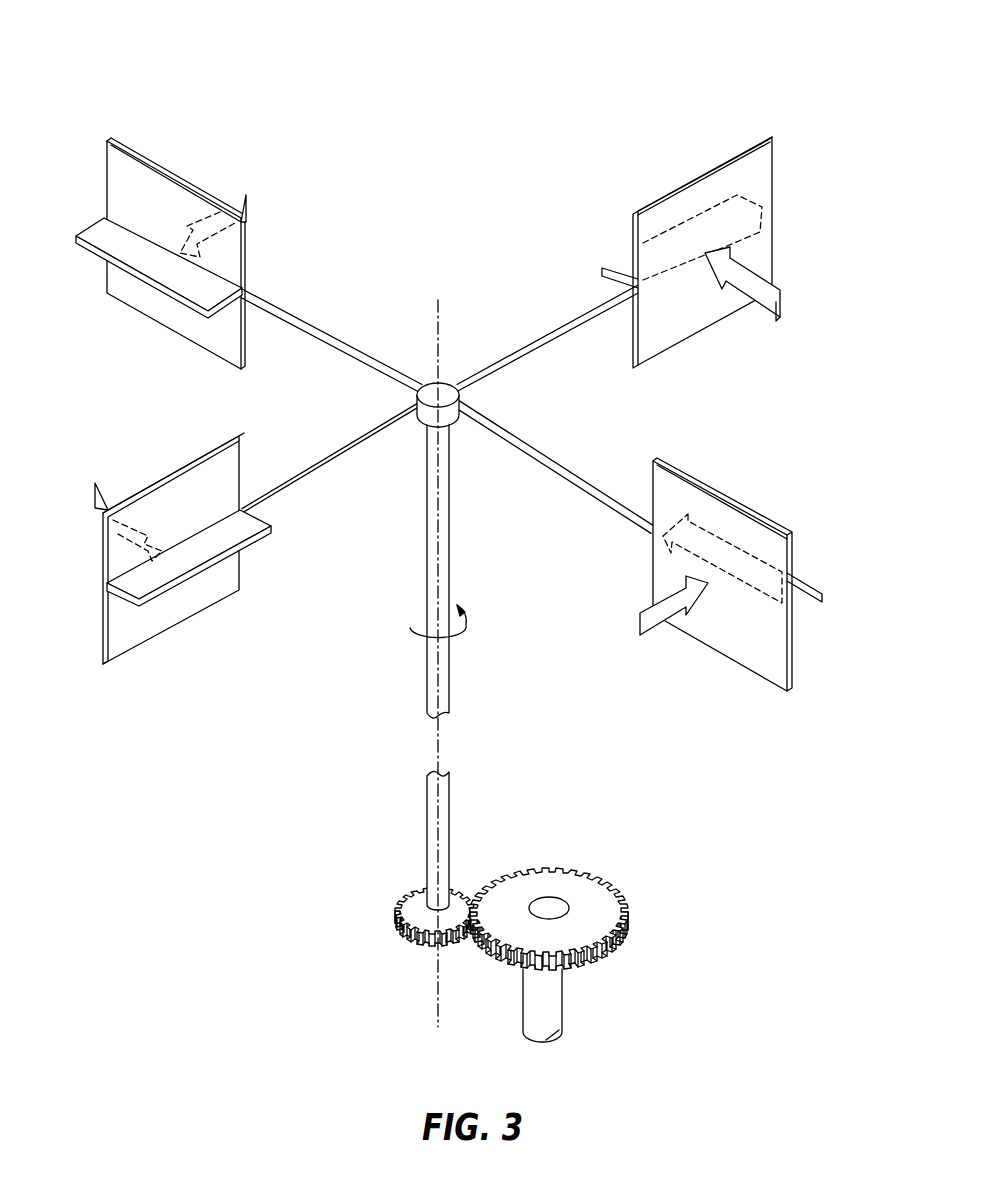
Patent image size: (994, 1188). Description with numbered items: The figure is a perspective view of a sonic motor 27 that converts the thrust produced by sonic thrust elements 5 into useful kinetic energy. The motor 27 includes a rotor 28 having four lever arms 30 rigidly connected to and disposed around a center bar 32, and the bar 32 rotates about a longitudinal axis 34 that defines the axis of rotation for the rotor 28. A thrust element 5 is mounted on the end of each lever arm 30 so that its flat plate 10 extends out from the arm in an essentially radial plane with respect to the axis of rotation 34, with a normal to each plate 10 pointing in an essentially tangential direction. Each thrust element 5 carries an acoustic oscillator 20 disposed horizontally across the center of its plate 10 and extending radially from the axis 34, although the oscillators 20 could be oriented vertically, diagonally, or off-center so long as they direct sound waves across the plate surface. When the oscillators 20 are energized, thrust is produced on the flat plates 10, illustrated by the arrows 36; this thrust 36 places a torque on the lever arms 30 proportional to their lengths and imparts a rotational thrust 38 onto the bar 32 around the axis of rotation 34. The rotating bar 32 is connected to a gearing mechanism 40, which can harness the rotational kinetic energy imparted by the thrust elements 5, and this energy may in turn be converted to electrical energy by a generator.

The motor 27 is at (528, 72).
The thrust elements 5 is at (460, 380).
The flat plate 10 is at (190, 185).
The oscillators 20 is at (255, 545).
The arrows 36 is at (234, 210).
The lever arms 30 is at (310, 330).
The rotor 28 is at (428, 381).
The center bar 32 is at (452, 570).
The longitudinal axis 34 is at (445, 323).
The rotational thrust 38 is at (466, 640).
The gearing mechanism 40 is at (482, 862).